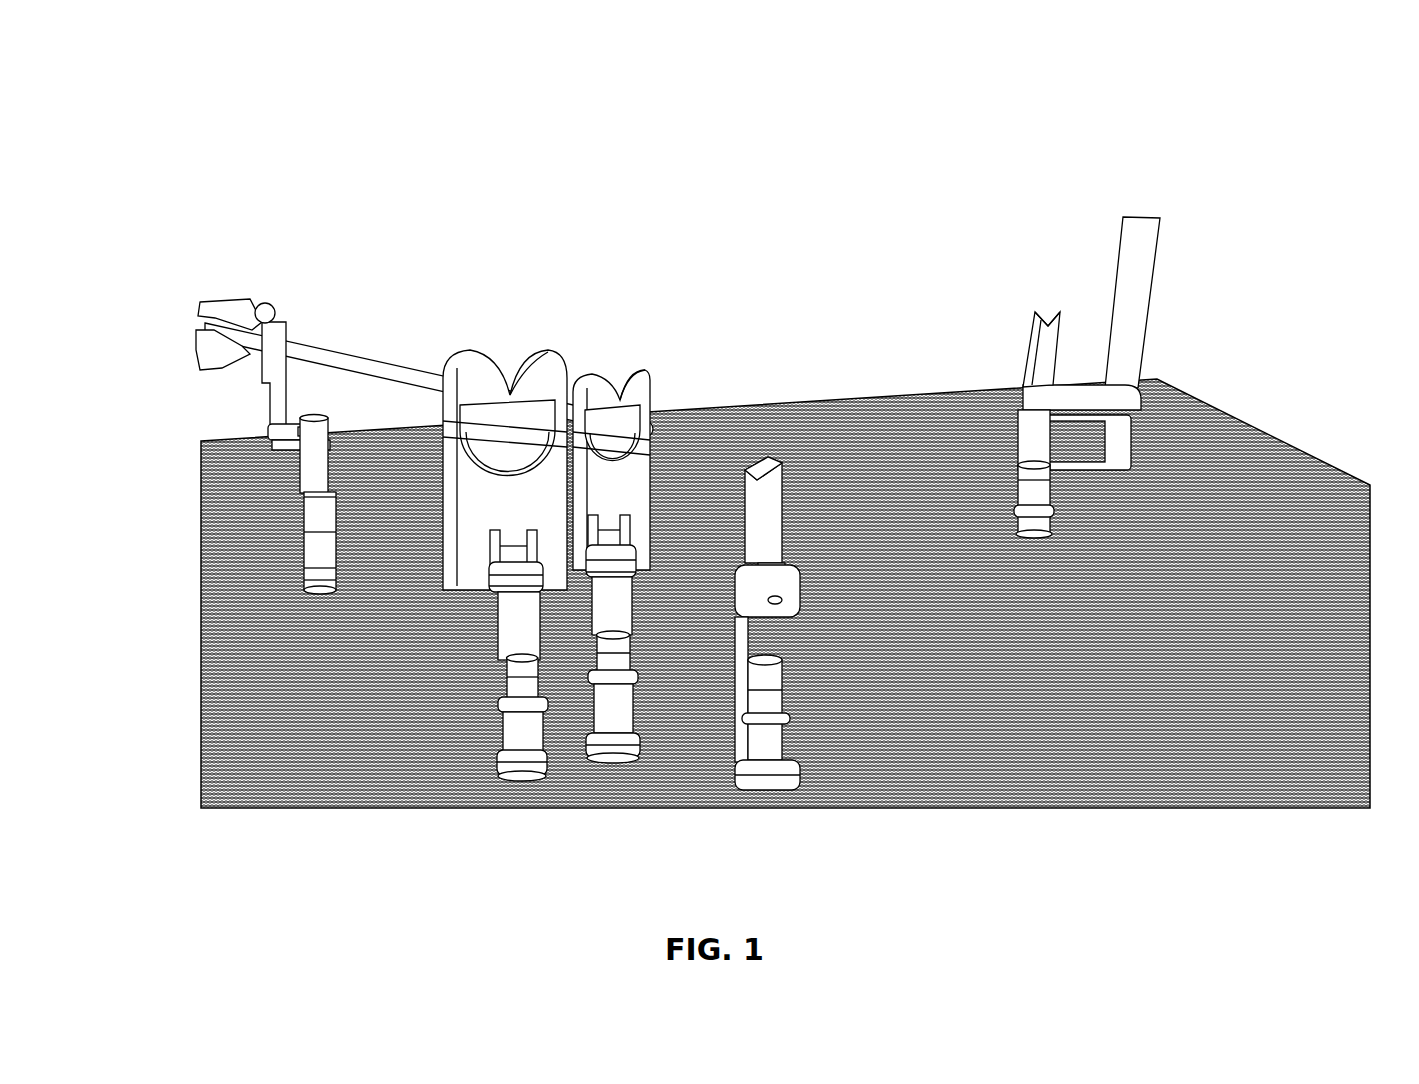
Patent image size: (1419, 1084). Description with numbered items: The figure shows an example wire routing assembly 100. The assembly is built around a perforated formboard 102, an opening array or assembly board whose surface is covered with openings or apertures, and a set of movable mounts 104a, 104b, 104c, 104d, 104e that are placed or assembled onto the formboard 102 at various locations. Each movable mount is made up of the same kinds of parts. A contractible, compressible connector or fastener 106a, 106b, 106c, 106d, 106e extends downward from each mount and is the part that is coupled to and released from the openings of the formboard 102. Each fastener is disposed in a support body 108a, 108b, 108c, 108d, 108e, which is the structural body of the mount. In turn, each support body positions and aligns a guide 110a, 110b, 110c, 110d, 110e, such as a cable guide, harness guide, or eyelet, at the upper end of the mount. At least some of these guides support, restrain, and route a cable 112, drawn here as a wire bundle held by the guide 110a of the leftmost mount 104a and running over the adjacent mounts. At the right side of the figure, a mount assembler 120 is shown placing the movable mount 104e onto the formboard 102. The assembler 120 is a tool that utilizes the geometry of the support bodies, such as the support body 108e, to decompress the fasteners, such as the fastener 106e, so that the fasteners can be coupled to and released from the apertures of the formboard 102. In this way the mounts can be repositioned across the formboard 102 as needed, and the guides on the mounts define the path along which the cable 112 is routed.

The wire routing assembly 100 is at (1324, 74).
The perforated formboard 102 is at (1342, 478).
The movable mount 104a is at (280, 304).
The movable mount 104b is at (456, 348).
The movable mount 104c is at (630, 360).
The movable mount 104d is at (764, 450).
The movable mount 104e is at (1040, 298).
The contractible fastener 106a is at (313, 552).
The contractible fastener 106b is at (522, 693).
The contractible fastener 106c is at (620, 650).
The contractible fastener 106d is at (772, 745).
The contractible fastener 106e is at (1018, 500).
The support body 108a is at (300, 447).
The support body 108b is at (538, 760).
The support body 108c is at (623, 740).
The support body 108d is at (770, 643).
The support body 108e is at (1013, 452).
The guide 110a is at (236, 302).
The guide 110b is at (530, 362).
The guide 110c is at (616, 384).
The guide 110d is at (736, 456).
The guide 110e is at (1072, 315).
The cable 112 is at (318, 384).
The mount assembler 120 is at (1138, 272).